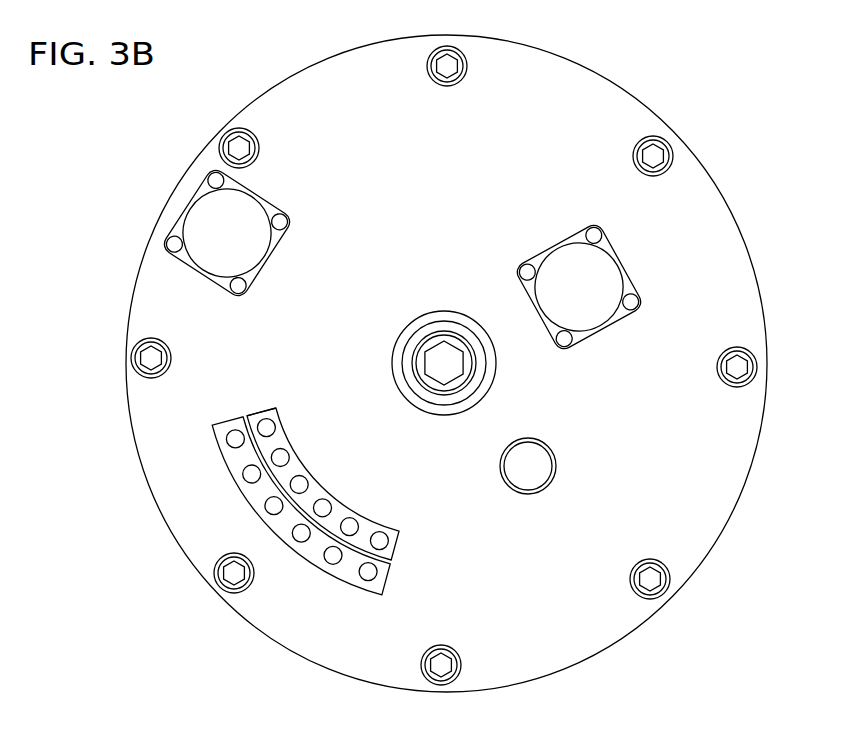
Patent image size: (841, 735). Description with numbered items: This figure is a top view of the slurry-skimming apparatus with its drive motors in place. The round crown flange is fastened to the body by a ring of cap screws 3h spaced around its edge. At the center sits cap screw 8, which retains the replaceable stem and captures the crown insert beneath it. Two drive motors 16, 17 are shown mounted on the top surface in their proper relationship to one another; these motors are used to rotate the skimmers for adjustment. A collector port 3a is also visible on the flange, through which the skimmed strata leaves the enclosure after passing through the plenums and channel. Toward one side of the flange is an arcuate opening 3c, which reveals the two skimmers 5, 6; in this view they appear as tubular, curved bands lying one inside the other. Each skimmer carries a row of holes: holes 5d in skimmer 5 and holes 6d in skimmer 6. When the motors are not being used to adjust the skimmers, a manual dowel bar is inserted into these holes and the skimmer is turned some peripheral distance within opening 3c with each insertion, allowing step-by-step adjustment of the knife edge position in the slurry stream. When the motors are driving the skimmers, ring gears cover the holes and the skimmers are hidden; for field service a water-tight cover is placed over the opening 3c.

The collector port 3a is at (528, 466).
The opening 3c is at (289, 428).
The cap screw 3h is at (656, 150).
The skimmer blade 5 is at (342, 484).
The hole 5d is at (354, 522).
The skimmer 6 is at (288, 506).
The hole 6d is at (266, 507).
The cap screw 8 is at (450, 372).
The motor 16 is at (590, 298).
The motor 17 is at (239, 244).